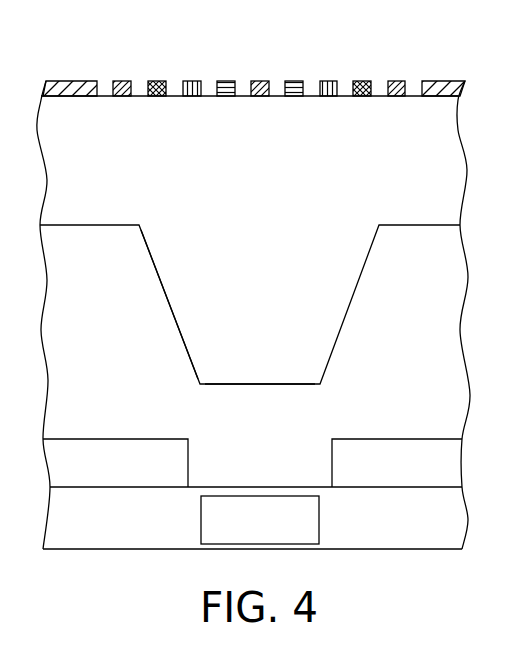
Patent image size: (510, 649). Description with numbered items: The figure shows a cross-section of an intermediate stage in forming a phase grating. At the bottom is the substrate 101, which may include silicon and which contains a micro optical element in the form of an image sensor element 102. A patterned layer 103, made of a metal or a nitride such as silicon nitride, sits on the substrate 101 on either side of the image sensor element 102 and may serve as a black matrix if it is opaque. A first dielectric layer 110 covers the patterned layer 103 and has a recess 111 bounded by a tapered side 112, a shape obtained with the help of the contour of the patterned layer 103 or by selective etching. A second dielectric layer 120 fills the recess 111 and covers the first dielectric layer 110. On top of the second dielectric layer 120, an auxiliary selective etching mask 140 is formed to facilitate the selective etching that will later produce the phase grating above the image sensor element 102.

The substrate 101 is at (378, 533).
The image sensor element 102 is at (239, 533).
The patterned layer 103 is at (100, 477).
The first dielectric layer 110 is at (378, 392).
The recess 111 is at (253, 371).
The tapered side 112 is at (170, 305).
The second dielectric layer 120 is at (377, 178).
The selective etching mask 140 is at (78, 81).